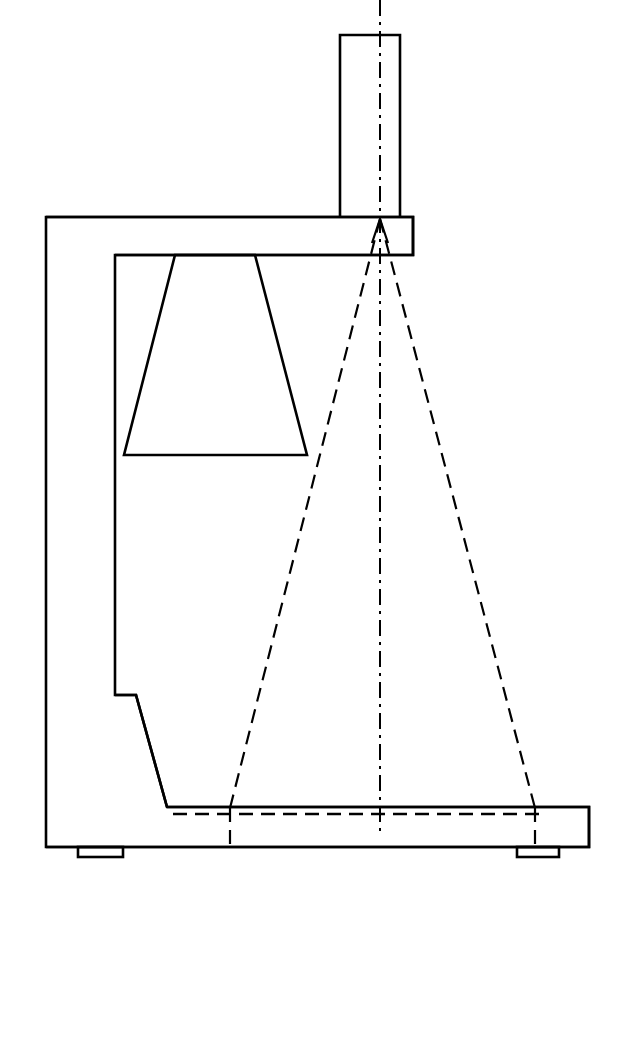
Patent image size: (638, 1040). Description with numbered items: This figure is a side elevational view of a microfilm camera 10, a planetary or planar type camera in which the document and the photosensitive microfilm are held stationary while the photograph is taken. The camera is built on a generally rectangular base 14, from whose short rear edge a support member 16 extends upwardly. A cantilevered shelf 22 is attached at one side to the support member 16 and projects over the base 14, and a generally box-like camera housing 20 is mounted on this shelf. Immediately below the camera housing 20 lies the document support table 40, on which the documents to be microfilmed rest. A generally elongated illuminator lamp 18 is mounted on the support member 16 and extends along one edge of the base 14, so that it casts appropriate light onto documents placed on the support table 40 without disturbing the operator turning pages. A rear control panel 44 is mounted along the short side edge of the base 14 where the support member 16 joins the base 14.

The microfilm camera 10 is at (226, 201).
The base 14 is at (340, 830).
The support member 16 is at (96, 680).
The illuminator lamp 18 is at (238, 386).
The camera housing 20 is at (388, 102).
The cantilevered shelf 22 is at (94, 256).
The document support table 40 is at (258, 806).
The rear control panel 44 is at (158, 684).